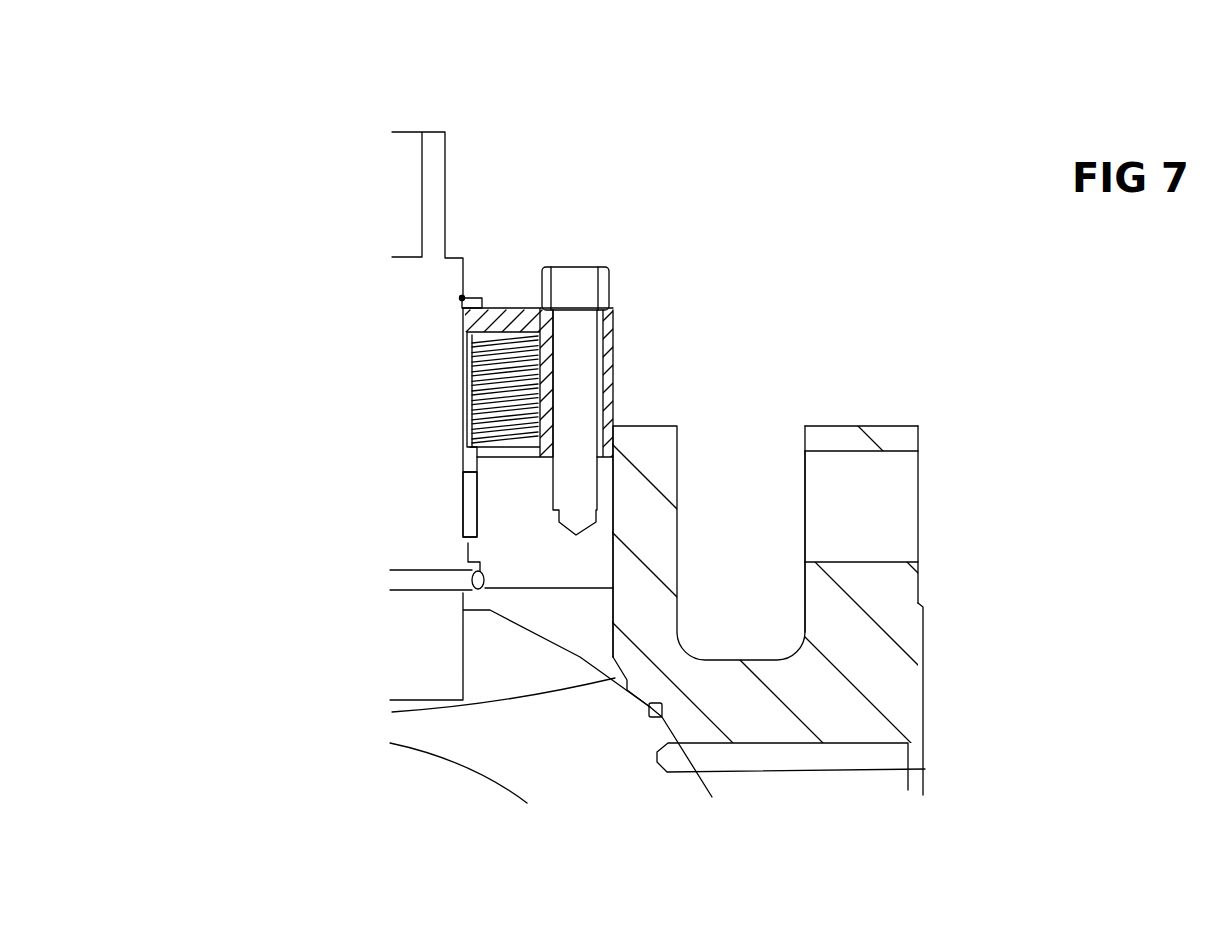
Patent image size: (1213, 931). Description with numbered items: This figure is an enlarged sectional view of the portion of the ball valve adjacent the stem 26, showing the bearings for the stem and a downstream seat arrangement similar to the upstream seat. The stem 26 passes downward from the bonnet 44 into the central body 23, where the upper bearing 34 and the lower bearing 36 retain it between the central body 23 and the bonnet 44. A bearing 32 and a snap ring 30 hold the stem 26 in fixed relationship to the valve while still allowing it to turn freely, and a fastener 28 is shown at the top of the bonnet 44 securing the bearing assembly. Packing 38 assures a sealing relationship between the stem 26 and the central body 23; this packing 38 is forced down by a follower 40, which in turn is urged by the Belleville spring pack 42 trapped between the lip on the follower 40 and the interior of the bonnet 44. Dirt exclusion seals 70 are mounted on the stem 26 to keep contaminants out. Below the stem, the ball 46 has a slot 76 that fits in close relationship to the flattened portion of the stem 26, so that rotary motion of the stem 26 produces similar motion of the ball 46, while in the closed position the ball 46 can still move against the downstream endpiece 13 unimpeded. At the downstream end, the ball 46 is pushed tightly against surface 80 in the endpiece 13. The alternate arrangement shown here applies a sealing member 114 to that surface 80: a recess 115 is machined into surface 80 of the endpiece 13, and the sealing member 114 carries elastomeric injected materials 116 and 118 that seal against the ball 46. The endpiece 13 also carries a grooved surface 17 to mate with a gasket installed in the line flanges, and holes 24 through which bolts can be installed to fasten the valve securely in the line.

The endpiece 13 is at (913, 426).
The grooved surface 17 is at (923, 618).
The central body 23 is at (508, 530).
The holes 24 is at (920, 500).
The stem 26 is at (445, 131).
The bolt 28 is at (610, 275).
The snap ring 30 is at (462, 297).
The bearing 32 is at (480, 297).
The upper bearing 34 is at (461, 313).
The lower bearing 36 is at (465, 555).
The packing 38 is at (463, 488).
The follower 40 is at (465, 440).
The Belleville spring pack 42 is at (490, 367).
The bonnet 44 is at (613, 338).
The ball 46 is at (609, 775).
The dirt exclusion seals 70 is at (472, 583).
The slot 76 is at (510, 702).
The surface 80 is at (925, 769).
The sealing member 114 is at (665, 712).
The recess 115 is at (668, 703).
The elastomeric injected material 116 is at (656, 705).
The elastomeric injected material 118 is at (665, 719).